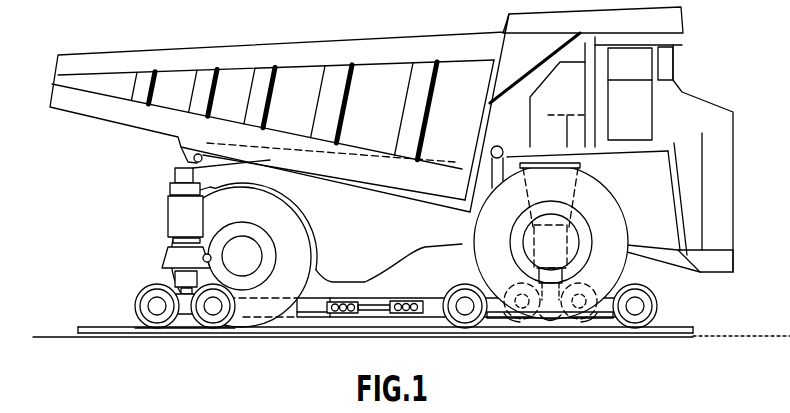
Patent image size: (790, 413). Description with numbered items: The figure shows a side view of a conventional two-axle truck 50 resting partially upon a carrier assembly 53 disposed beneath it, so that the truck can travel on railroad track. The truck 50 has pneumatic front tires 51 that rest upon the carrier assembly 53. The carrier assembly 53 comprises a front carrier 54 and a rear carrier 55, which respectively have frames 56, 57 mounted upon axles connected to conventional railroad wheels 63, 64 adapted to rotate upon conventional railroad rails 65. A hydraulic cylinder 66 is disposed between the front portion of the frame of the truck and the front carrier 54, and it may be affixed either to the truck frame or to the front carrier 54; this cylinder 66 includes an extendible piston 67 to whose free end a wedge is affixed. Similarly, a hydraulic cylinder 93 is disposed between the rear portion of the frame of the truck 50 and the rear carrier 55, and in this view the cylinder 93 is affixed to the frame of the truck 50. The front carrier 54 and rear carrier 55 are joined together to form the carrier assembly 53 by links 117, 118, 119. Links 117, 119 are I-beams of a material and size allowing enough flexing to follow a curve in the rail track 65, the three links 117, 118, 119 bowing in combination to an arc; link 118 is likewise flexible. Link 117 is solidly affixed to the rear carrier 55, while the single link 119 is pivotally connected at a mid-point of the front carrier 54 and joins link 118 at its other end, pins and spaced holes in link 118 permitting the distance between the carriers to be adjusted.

The truck 50 is at (357, 43).
The pneumatic front tires 51 is at (604, 193).
The carrier assembly 53 is at (330, 341).
The front carrier 54 is at (547, 337).
The rear carrier 55 is at (167, 342).
The frame 56 is at (607, 322).
The frame 57 is at (190, 333).
The railroad wheels 63 is at (636, 330).
The railroad wheels 64 is at (135, 302).
The railroad rails 65 is at (80, 330).
The hydraulic cylinder 66 is at (569, 240).
The extendible piston 67 is at (592, 283).
The hydraulic cylinder 93 is at (168, 208).
The link 117 is at (310, 320).
The link 118 is at (366, 316).
The link 119 is at (435, 316).